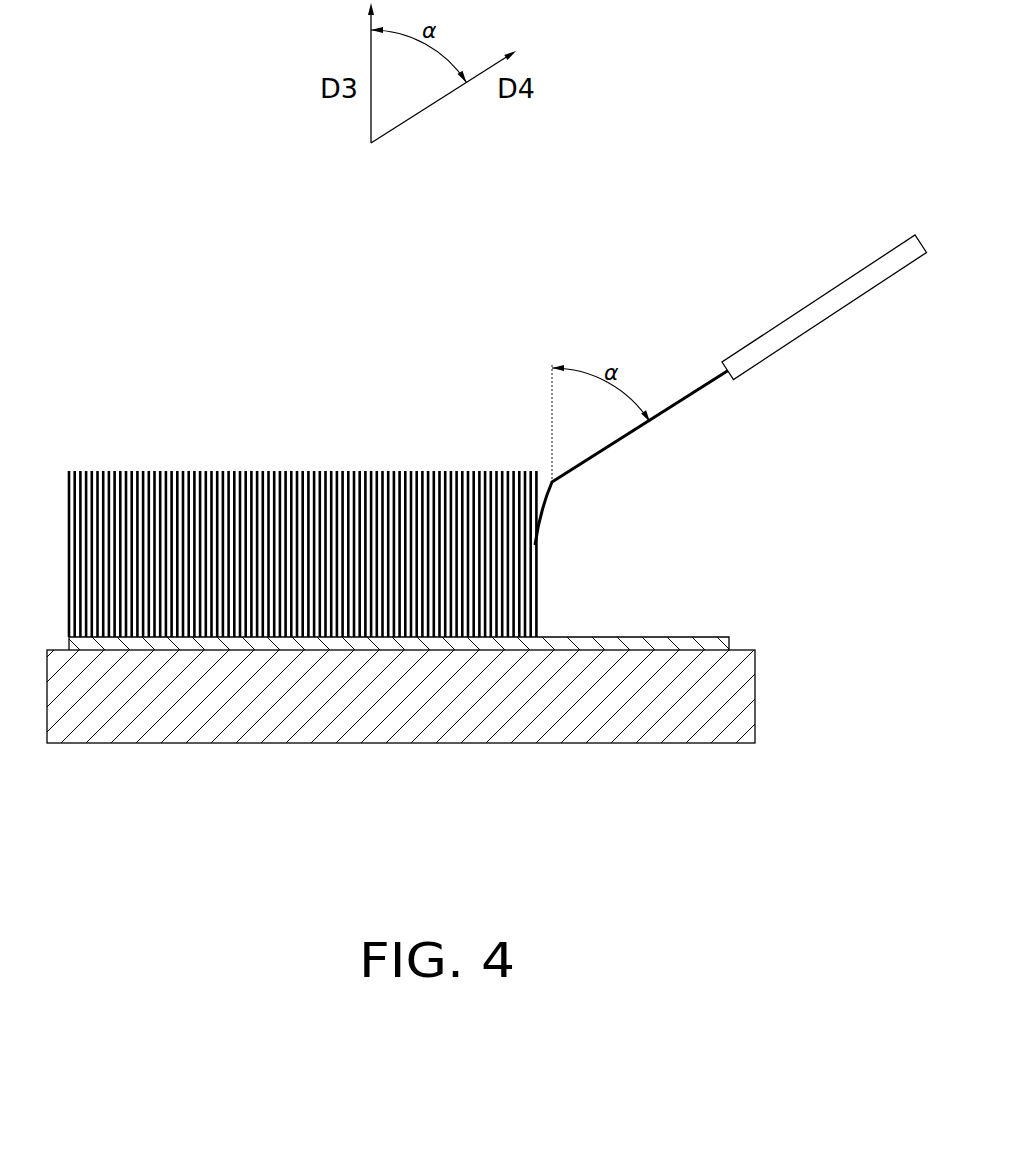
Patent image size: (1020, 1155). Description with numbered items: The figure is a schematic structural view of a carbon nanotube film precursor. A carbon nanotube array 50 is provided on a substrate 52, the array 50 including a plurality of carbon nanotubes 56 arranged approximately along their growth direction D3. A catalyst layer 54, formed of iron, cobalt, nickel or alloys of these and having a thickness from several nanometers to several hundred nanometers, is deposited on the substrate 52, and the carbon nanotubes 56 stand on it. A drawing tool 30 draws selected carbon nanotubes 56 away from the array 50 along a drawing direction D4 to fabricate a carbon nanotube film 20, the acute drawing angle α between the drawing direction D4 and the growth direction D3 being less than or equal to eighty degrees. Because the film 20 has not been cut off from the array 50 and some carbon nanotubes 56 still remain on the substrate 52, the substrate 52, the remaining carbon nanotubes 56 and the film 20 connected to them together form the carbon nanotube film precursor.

The carbon nanotube film 20 is at (690, 395).
The drawing tool 30 is at (822, 310).
The carbon nanotube array 50 is at (401, 669).
The substrate 52 is at (490, 698).
The catalyst layer 54 is at (383, 637).
The carbon nanotubes 56 is at (518, 825).